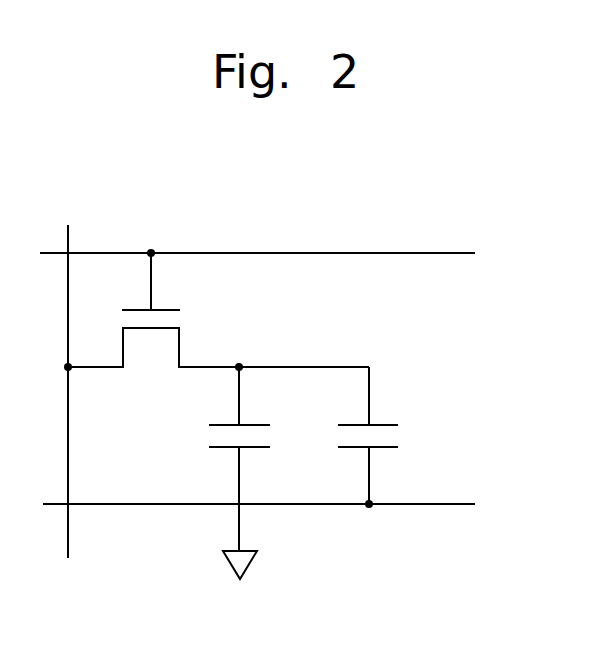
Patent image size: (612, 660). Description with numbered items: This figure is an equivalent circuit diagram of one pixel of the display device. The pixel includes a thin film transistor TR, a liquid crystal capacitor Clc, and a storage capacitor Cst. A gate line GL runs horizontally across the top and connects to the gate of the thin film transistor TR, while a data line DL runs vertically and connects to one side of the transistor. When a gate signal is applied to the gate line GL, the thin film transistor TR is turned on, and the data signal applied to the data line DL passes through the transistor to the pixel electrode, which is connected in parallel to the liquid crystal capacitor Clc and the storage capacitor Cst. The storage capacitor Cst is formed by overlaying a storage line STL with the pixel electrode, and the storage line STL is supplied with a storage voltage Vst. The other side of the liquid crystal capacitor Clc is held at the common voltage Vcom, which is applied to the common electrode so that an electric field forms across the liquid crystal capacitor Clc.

The gate line GL is at (272, 255).
The data line DL is at (68, 407).
The storage line STL is at (280, 505).
The thin film transistor TR is at (185, 325).
The liquid crystal capacitor Clc is at (258, 459).
The storage capacitor Cst is at (337, 435).
The storage voltage Vst is at (367, 517).
The common voltage Vcom is at (240, 579).